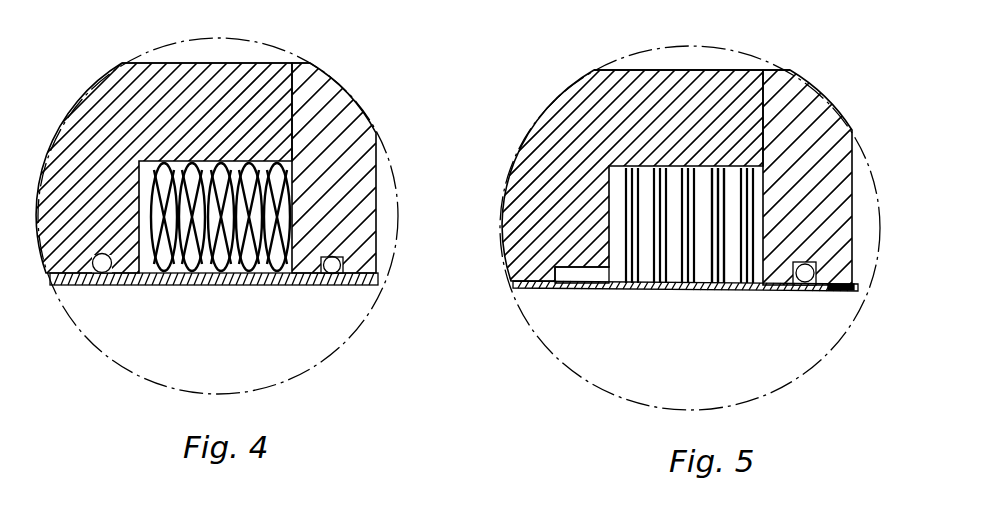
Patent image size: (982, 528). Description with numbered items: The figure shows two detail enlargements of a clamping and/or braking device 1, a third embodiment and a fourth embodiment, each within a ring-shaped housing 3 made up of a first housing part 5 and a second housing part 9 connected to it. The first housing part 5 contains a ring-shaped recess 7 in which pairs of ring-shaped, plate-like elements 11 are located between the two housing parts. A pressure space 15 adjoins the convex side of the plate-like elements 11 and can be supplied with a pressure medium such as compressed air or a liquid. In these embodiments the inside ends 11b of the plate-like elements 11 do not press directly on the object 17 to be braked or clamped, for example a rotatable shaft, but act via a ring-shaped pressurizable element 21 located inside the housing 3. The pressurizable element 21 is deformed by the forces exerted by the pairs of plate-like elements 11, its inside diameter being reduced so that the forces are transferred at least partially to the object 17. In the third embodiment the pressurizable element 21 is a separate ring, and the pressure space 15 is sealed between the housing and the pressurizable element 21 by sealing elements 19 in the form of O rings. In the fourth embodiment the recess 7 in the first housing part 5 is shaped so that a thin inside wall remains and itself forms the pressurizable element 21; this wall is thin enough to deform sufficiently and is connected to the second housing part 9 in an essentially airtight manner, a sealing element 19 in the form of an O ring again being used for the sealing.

In FIG. 4, the clamping and/or braking device 1 is at (384, 66).
In FIG. 5, the clamping and/or braking device 1 is at (762, 56).
In FIG. 5, the ring-shaped housing 3 is at (816, 101).
In FIG. 4, the first housing part 5 is at (95, 122).
In FIG. 5, the first housing part 5 is at (562, 115).
In FIG. 5, the ring-shaped recess 7 is at (614, 272).
In FIG. 4, the second housing part 9 is at (372, 128).
In FIG. 5, the second housing part 9 is at (835, 148).
In FIG. 4, the ring-shaped, plate-like element 11 is at (156, 275).
In FIG. 5, the ring-shaped, plate-like element 11 is at (755, 290).
In FIG. 4, the inside end 11b is at (210, 273).
In FIG. 4, the pressure space 15 is at (260, 270).
In FIG. 5, the pressure space 15 is at (703, 272).
In FIG. 4, the object to be acted on 17 is at (340, 330).
In FIG. 5, the object to be acted on 17 is at (812, 350).
In FIG. 4, the sealing element 19 is at (103, 280).
In FIG. 5, the sealing element 19 is at (808, 278).
In FIG. 4, the pressurizable element 21 is at (305, 284).
In FIG. 5, the pressurizable element 21 is at (657, 287).